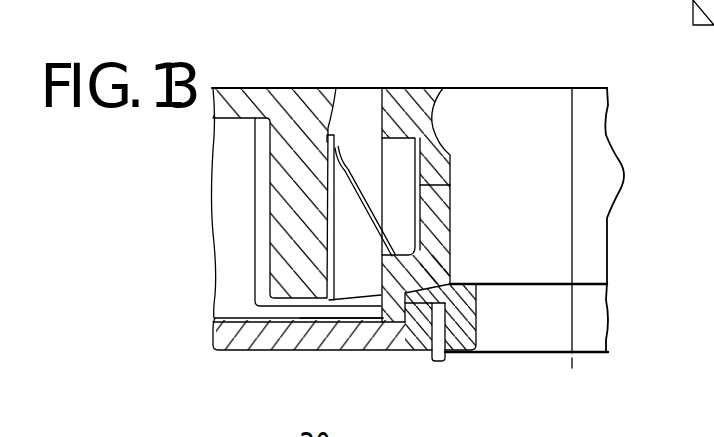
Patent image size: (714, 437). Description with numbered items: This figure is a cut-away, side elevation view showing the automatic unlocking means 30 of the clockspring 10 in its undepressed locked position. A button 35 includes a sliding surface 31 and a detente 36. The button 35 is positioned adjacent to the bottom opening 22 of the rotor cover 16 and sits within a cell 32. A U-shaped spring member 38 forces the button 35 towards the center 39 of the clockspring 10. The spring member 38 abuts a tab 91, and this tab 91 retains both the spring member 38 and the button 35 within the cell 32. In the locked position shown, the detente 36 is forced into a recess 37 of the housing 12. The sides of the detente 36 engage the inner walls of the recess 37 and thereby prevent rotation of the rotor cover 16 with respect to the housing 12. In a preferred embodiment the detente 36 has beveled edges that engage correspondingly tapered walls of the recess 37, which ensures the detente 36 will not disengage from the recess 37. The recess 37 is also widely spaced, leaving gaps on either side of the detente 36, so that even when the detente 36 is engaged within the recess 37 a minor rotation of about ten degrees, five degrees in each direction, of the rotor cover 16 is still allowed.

The clockspring 10 is at (206, 309).
The housing 12 is at (254, 337).
The rotor cover 16 is at (267, 98).
The bottom opening 22 is at (514, 330).
The automatic unlocking means 30 is at (378, 86).
The sliding surface 31 is at (443, 88).
The cell 32 is at (372, 149).
The button 35 is at (440, 151).
The detente 36 is at (352, 333).
The recess 37 is at (400, 338).
The U-shaped spring member 38 is at (450, 185).
The center 39 is at (573, 87).
The tab 91 is at (342, 163).